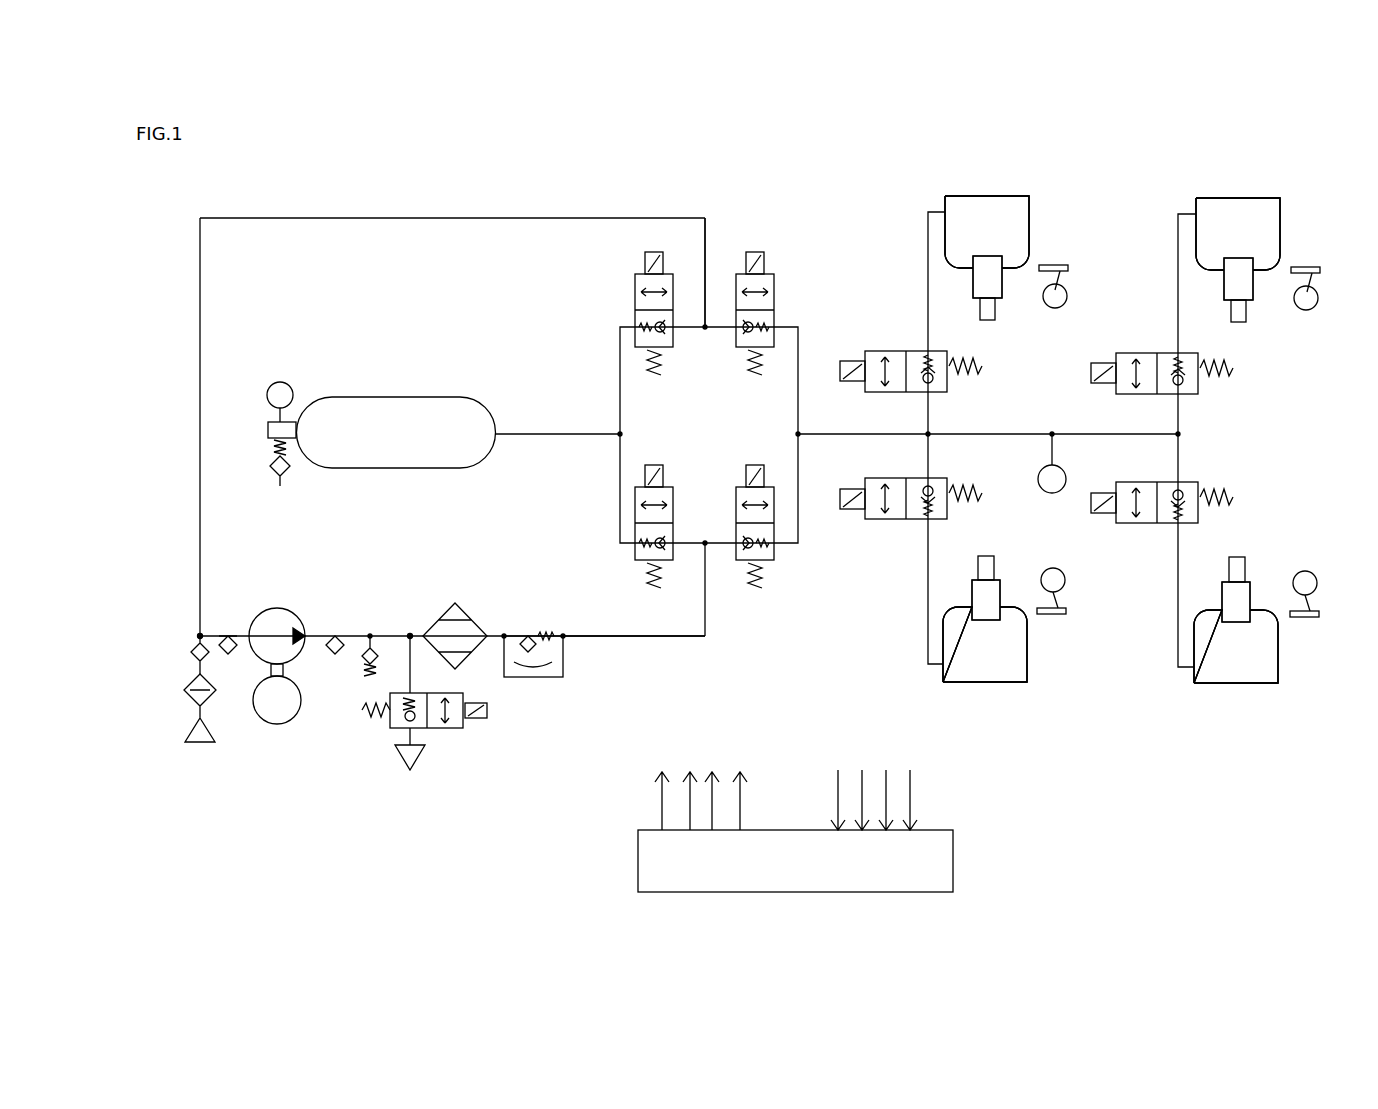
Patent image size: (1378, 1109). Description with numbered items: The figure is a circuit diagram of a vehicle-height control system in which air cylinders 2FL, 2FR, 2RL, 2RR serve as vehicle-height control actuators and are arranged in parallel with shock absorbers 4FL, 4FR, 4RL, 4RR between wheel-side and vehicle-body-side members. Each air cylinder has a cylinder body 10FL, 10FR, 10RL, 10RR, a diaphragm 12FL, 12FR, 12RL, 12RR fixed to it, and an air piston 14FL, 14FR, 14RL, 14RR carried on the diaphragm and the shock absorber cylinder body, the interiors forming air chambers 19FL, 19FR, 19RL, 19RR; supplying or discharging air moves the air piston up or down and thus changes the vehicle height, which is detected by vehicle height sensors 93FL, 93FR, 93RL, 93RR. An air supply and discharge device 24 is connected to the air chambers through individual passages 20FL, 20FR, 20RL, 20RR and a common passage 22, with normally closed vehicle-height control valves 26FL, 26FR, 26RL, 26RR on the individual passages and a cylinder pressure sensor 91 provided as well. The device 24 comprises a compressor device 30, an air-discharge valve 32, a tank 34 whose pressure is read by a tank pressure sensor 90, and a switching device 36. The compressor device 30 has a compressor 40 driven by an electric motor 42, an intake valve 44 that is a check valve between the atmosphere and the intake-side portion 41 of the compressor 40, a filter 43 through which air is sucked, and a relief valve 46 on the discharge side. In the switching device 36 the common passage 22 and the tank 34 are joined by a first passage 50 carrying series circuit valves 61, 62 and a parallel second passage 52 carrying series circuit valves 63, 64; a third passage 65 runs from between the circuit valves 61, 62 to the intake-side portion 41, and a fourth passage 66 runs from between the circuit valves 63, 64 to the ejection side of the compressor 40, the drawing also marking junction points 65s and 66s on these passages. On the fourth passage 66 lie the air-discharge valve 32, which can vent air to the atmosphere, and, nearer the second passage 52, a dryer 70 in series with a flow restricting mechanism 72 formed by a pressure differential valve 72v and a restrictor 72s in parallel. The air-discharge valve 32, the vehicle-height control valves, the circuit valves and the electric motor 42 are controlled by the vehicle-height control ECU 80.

The air supply and discharge device 24 is at (478, 184).
The third passage 65 is at (578, 218).
The switching device 36 is at (720, 226).
The first passage 50 is at (620, 362).
The second passage 52 is at (620, 496).
The circuit valve 61 is at (635, 290).
The circuit valve 62 is at (774, 290).
The circuit valve 63 is at (673, 497).
The circuit valve 64 is at (774, 490).
The tank 34 is at (388, 388).
The tank pressure sensor 90 is at (286, 382).
The compressor device 30 is at (272, 598).
The suction passage junction 65s is at (200, 632).
The intake valve 44 is at (196, 650).
The filter 43 is at (192, 688).
The intake-side portion 41 is at (244, 648).
The compressor 40 is at (266, 612).
The electric motor 42 is at (262, 720).
The relief valve 46 is at (362, 662).
The exhaust branch junction 66s is at (408, 632).
The dryer 70 is at (434, 618).
The flow restricting mechanism 72 is at (521, 626).
The pressure differential valve 72v is at (533, 628).
The restrictor 72s is at (535, 688).
The fourth passage 66 is at (630, 642).
The air-discharge valve 32 is at (455, 728).
The common passage 22 is at (843, 432).
The cylinder pressure sensor 91 is at (1038, 484).
The air cylinder 2RL is at (1030, 186).
The air chamber 19RL is at (986, 206).
The cylinder body 10RL is at (958, 198).
The diaphragm 12RL is at (948, 266).
The air piston 14RL is at (982, 284).
The shock absorber 4RL is at (996, 310).
The vehicle height sensor 93RL is at (1058, 266).
The individual passage 20RL is at (926, 328).
The vehicle-height control valve 26RL is at (950, 392).
The air cylinder 2RR is at (1028, 696).
The air chamber 19RR is at (988, 696).
The cylinder body 10RR is at (966, 684).
The diaphragm 12RR is at (960, 608).
The air piston 14RR is at (978, 592).
The shock absorber 4RR is at (998, 566).
The vehicle height sensor 93RR is at (1050, 616).
The individual passage 20RR is at (926, 552).
The vehicle-height control valve 26RR is at (944, 488).
The air cylinder 2FL is at (1281, 188).
The air chamber 19FL is at (1237, 208).
The cylinder body 10FL is at (1210, 200).
The diaphragm 12FL is at (1199, 268).
The air piston 14FL is at (1233, 286).
The shock absorber 4FL is at (1247, 312).
The vehicle height sensor 93FL is at (1310, 268).
The individual passage 20FL is at (1176, 328).
The vehicle-height control valve 26FL is at (1200, 394).
The air cylinder 2FR is at (1279, 697).
The air chamber 19FR is at (1238, 688).
The cylinder body 10FR is at (1216, 686).
The diaphragm 12FR is at (1210, 608).
The air piston 14FR is at (1228, 594).
The shock absorber 4FR is at (1248, 568).
The vehicle height sensor 93FR is at (1297, 618).
The individual passage 20FR is at (1176, 552).
The vehicle-height control valve 26FR is at (1192, 490).
The vehicle-height control ECU 80 is at (795, 831).